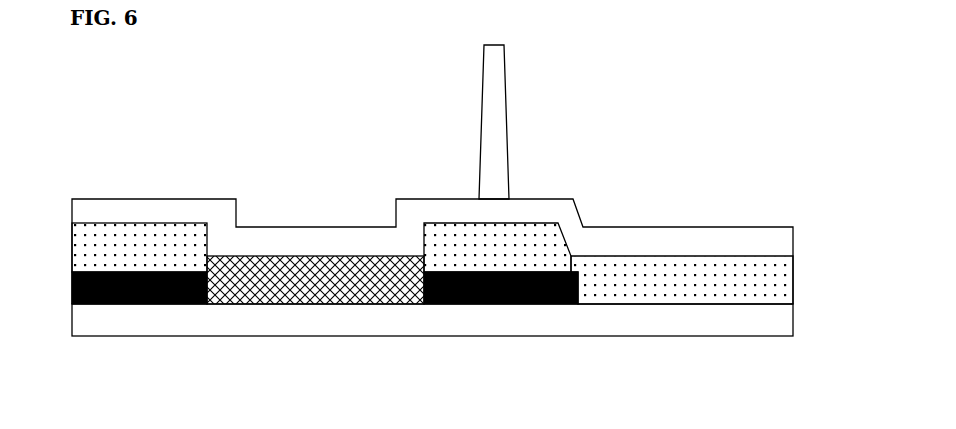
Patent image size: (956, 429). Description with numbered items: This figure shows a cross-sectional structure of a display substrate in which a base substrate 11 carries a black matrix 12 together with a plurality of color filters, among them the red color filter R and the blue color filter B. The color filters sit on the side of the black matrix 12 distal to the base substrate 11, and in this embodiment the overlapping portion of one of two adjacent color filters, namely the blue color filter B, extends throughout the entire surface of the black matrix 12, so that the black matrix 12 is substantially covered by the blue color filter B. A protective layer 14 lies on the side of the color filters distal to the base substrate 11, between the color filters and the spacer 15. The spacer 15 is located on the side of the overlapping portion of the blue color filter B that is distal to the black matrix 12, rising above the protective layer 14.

The base substrate 11 is at (318, 316).
The black matrix 12 is at (495, 304).
The protective layer 14 is at (643, 235).
The spacer 15 is at (495, 169).
The red color filter R is at (288, 257).
The blue color filter B is at (722, 257).